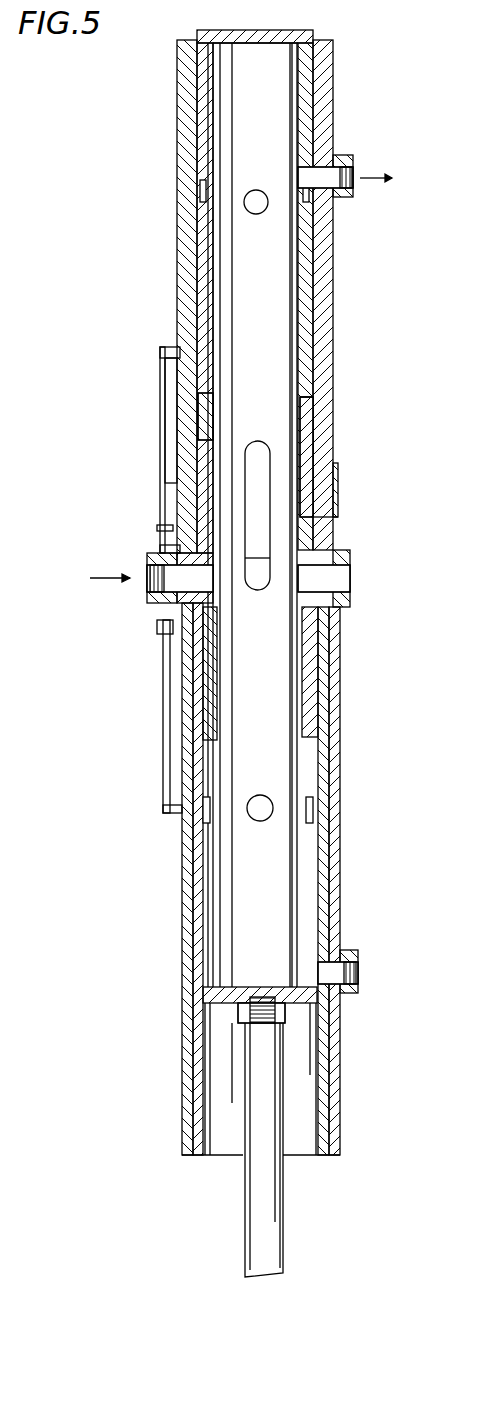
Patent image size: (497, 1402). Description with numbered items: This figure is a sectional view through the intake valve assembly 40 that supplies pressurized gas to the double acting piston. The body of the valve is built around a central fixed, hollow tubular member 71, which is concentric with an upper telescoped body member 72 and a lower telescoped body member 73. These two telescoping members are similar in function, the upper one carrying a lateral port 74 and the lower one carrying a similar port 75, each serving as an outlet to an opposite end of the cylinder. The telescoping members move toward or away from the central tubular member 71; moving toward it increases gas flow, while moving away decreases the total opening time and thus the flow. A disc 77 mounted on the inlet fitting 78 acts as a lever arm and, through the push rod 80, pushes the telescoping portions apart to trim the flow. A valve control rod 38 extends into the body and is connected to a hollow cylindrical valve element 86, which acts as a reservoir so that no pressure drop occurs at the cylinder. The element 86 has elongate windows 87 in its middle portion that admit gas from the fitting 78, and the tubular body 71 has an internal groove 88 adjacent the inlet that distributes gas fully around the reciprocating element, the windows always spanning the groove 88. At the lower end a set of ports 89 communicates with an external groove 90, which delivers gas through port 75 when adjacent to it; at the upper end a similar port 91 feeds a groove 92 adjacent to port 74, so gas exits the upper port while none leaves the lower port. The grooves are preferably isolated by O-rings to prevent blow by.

The valve control rod 38 is at (275, 1222).
The intake valve assembly 40 is at (386, 701).
The central fixed hollow tubular member 71 is at (330, 535).
The upper telescoped body member 72 is at (333, 265).
The lower telescoped body member 73 is at (203, 963).
The lateral port 74 is at (352, 158).
The port 75 is at (358, 972).
The disc 77 is at (170, 548).
The inlet fitting 78 is at (352, 575).
The push rod 80 is at (162, 437).
The hollow cylindrical valve element 86 is at (238, 892).
The elongate window 87 is at (258, 441).
The internal groove 88 is at (308, 572).
The ports 89 is at (262, 795).
The groove 90 is at (203, 815).
The port 91 is at (256, 190).
The groove 92 is at (200, 191).